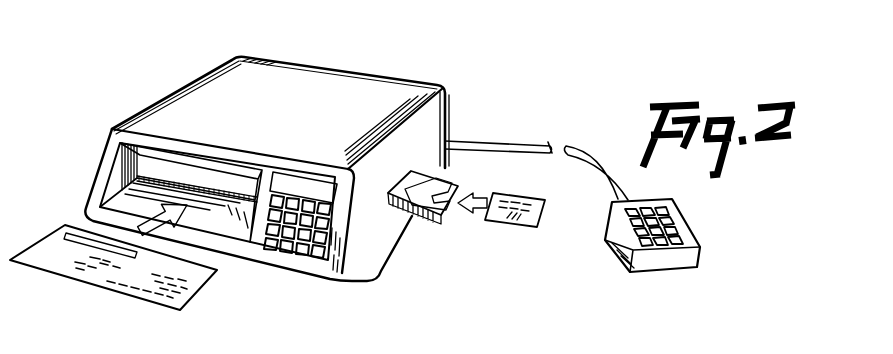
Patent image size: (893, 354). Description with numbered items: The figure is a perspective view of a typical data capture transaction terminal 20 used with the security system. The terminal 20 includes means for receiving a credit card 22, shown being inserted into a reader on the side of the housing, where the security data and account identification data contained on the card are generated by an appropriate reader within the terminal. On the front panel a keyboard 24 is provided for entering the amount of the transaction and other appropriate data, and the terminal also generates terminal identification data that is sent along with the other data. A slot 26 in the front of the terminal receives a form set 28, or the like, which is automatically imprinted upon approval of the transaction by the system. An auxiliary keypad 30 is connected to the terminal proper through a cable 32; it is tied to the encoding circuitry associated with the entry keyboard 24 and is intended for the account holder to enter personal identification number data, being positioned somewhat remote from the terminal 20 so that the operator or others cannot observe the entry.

The terminal 20 is at (340, 77).
The credit card 22 is at (502, 218).
The keyboard 24 is at (273, 258).
The slot 26 is at (135, 166).
The form set 28 is at (72, 268).
The auxiliary keypad 30 is at (693, 233).
The cable 32 is at (537, 145).